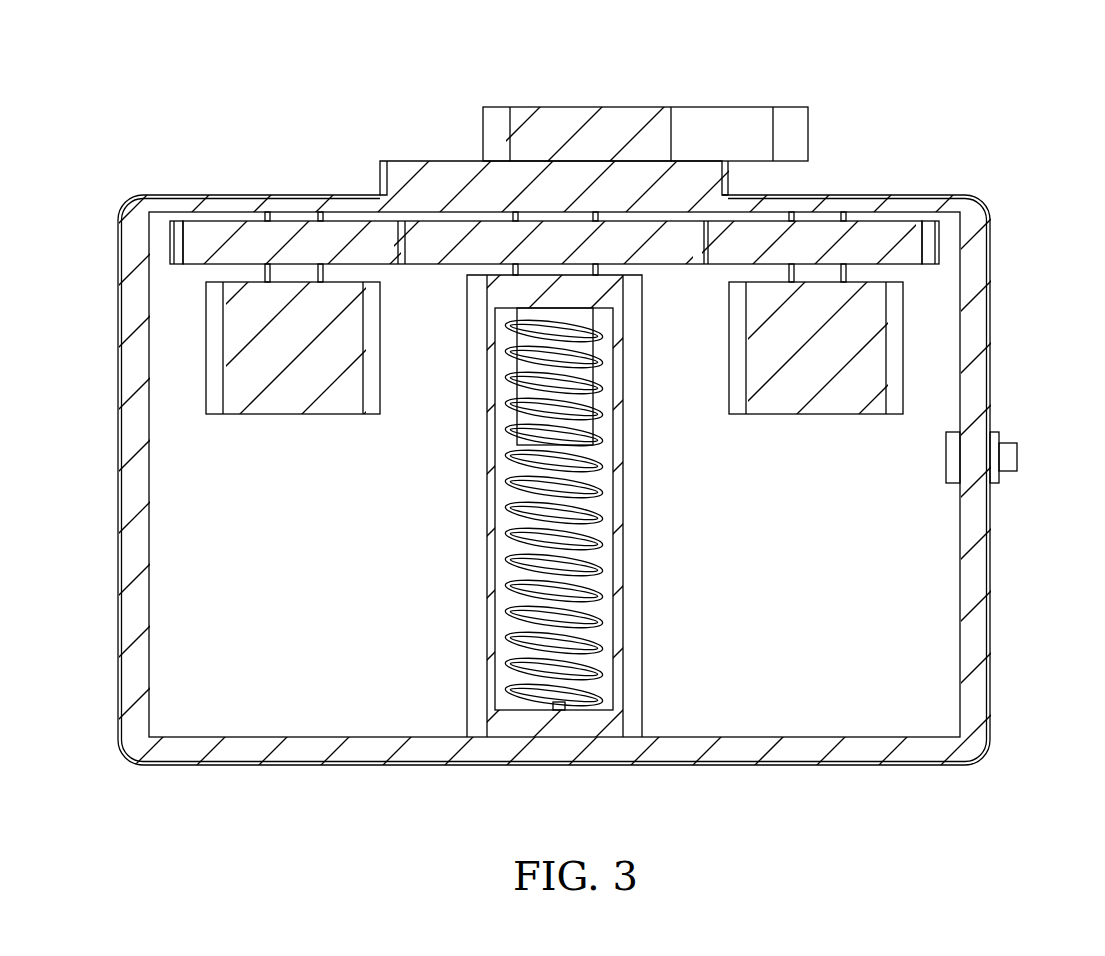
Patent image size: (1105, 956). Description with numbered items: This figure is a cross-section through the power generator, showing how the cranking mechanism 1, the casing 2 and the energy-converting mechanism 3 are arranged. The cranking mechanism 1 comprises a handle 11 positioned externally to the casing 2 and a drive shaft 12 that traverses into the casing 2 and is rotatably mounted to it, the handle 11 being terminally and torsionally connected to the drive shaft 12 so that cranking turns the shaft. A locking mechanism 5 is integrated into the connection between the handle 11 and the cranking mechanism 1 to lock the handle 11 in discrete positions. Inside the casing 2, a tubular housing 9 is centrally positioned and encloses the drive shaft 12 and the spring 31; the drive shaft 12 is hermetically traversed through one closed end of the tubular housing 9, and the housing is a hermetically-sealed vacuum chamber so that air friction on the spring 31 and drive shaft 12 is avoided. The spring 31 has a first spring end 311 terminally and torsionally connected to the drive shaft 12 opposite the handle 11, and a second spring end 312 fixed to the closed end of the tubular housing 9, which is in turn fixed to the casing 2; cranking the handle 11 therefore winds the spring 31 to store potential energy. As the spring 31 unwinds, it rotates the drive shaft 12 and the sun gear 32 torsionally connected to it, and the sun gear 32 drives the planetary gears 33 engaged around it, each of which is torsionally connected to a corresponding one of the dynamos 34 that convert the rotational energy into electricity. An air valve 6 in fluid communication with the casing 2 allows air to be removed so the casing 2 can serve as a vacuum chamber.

The cranking mechanism 1 is at (686, 52).
The casing 2 is at (130, 498).
The energy-converting mechanism 3 is at (326, 561).
The locking mechanism 5 is at (382, 187).
The air valve 6 is at (1013, 451).
The tubular housing 9 is at (468, 497).
The handle 11 is at (803, 118).
The drive shaft 12 is at (588, 315).
The spring 31 is at (602, 488).
The first spring end 311 is at (535, 312).
The second spring end 312 is at (583, 718).
The sun gear 32 is at (425, 264).
The planetary gears 33 is at (195, 264).
The dynamos 34 is at (290, 415).